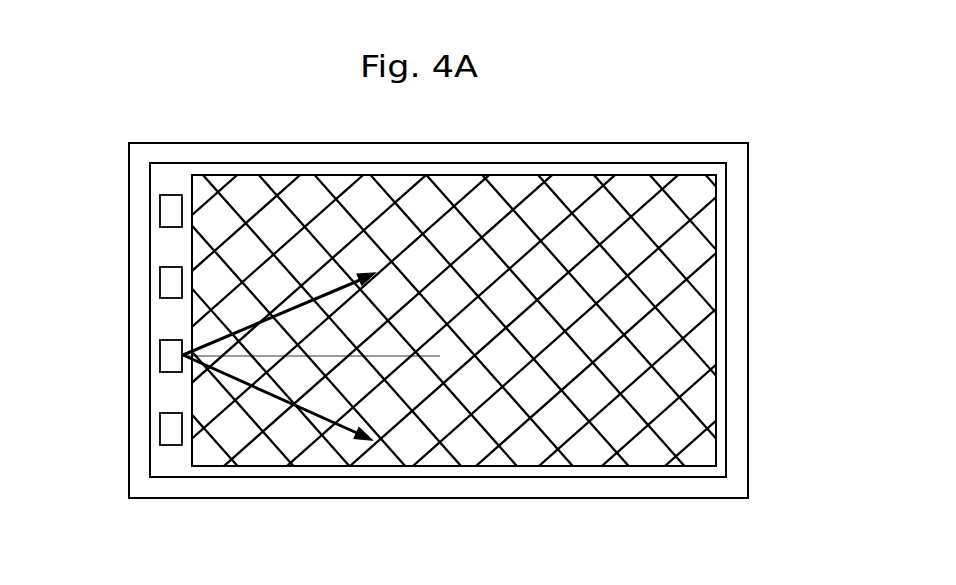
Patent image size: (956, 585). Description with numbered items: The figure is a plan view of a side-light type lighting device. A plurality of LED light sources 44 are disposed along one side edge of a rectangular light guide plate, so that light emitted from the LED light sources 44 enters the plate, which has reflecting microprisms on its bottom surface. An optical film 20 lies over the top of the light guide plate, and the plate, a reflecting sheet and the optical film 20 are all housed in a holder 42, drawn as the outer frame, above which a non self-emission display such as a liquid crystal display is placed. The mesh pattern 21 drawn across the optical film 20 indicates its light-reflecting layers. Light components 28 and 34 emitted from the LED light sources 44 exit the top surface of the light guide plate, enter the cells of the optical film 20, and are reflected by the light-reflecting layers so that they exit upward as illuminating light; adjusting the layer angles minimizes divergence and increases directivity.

The optical film 20 is at (727, 224).
The mesh pattern 21 is at (560, 196).
The light component 28 is at (316, 292).
The light component 34 is at (338, 430).
The holder 42 is at (700, 144).
The LED light sources 44 is at (168, 212).